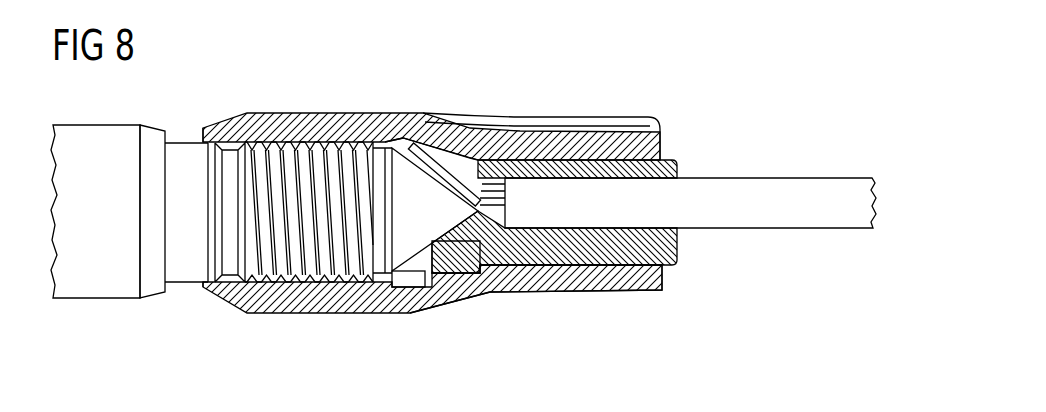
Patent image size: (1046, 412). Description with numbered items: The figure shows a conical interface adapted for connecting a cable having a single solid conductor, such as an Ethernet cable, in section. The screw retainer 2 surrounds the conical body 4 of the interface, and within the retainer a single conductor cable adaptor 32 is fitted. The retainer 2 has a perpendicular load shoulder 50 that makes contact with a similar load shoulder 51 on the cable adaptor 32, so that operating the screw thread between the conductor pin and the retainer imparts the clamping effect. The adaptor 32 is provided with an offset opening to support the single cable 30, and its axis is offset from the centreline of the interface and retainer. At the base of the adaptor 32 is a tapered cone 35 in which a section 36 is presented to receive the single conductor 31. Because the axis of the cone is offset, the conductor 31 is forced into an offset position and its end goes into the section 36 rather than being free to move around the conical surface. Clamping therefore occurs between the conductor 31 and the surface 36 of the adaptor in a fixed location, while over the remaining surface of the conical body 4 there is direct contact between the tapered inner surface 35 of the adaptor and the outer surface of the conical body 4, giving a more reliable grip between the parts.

The retainer 2 is at (335, 122).
The conical body 4 is at (413, 238).
The single cable 30 is at (792, 190).
The cable conductor 31 is at (508, 140).
The cable adaptor 32 is at (675, 257).
The tapered cone 35 is at (455, 273).
The section 36 is at (462, 185).
The load shoulder 50 is at (475, 300).
The load shoulder 51 is at (476, 271).